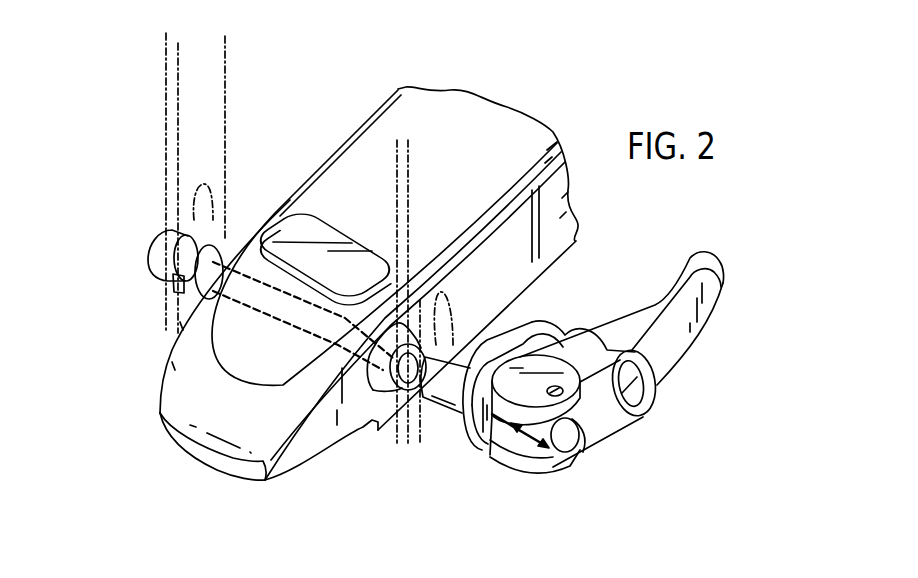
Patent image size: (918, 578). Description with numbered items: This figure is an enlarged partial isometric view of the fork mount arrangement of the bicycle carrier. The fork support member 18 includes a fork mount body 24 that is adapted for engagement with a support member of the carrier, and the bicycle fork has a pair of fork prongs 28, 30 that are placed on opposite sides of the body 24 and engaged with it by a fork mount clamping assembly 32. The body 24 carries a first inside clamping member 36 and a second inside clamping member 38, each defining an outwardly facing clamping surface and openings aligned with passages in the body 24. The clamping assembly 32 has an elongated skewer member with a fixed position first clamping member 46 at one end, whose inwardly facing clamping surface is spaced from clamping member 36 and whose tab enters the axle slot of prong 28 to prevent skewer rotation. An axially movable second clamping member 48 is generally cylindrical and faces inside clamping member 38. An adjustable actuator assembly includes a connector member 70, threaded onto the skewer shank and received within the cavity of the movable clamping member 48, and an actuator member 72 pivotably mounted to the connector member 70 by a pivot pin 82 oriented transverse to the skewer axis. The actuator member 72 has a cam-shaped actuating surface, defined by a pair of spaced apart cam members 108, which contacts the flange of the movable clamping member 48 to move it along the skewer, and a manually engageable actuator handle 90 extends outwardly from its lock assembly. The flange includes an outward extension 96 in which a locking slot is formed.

The fork support member 18 is at (143, 348).
The fork mount body 24 is at (162, 381).
The fork prong 28 is at (225, 138).
The fork prong 30 is at (455, 183).
The fork mount clamping assembly 32 is at (428, 464).
The first inside clamping member 36 is at (212, 218).
The second inside clamping member 38 is at (437, 313).
The fixed position first clamping member 46 is at (148, 244).
The axially movable second clamping member 48 is at (447, 418).
The connector member 70 is at (542, 445).
The actuator member 72 is at (640, 423).
The pivot pin 82 is at (556, 386).
The actuator handle 90 is at (722, 288).
The outward extension 96 is at (532, 323).
The cam members 108 is at (505, 450).